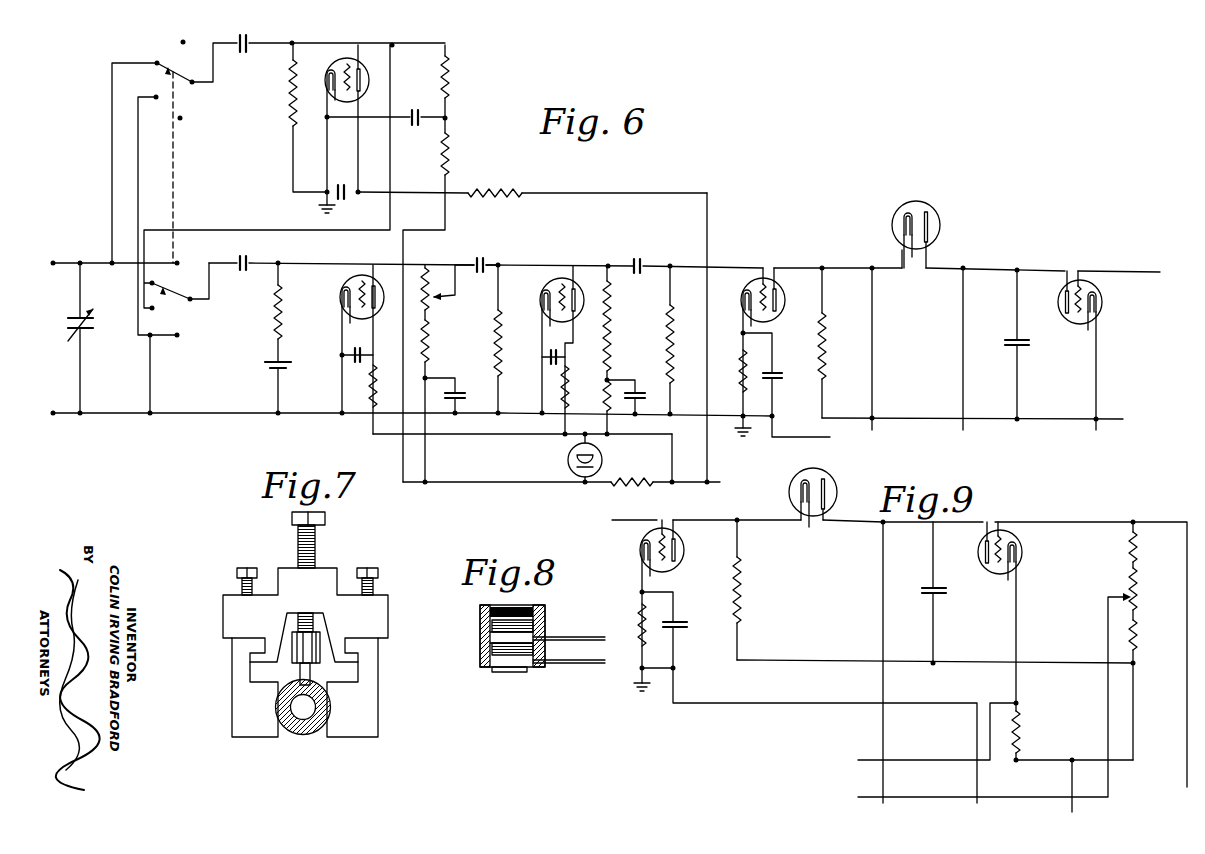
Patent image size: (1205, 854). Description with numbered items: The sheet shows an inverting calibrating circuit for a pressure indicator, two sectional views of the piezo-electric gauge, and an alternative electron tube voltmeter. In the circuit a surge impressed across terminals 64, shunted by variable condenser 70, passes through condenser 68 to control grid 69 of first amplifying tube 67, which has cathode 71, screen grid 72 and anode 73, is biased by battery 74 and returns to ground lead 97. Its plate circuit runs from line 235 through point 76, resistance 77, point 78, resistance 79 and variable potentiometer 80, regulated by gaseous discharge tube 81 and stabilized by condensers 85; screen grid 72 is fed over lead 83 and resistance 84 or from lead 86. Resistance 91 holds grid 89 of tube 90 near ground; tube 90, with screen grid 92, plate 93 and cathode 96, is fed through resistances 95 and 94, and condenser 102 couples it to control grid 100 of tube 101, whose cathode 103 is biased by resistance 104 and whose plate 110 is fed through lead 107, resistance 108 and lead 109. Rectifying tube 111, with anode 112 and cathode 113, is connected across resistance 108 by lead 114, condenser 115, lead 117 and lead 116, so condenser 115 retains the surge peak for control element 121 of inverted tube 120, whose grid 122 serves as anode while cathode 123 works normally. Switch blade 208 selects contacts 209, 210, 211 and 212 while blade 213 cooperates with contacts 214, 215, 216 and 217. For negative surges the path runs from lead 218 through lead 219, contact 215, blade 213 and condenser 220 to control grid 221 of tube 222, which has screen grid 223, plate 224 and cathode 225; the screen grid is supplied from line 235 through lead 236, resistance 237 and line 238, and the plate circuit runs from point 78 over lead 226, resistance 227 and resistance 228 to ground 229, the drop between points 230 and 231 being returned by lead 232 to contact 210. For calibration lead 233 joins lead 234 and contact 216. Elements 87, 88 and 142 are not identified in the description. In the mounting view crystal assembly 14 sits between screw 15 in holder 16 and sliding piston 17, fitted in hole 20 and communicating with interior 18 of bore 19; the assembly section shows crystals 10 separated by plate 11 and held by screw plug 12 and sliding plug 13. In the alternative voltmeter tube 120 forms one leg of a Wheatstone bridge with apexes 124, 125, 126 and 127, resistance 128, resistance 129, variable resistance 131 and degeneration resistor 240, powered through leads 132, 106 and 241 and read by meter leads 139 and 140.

In FIG. 6, the terminals 64 is at (50, 410).
In FIG. 6, the variable condenser 70 is at (74, 316).
In FIG. 6, the lead 218 is at (91, 272).
In FIG. 6, the lead 219 is at (108, 132).
In FIG. 6, the contact 215 is at (156, 61).
In FIG. 6, the switch blade 213 is at (183, 76).
In FIG. 6, the contact 214 is at (182, 39).
In FIG. 6, the contact 216 is at (155, 95).
In FIG. 6, the contact 217 is at (184, 122).
In FIG. 6, the lead 234 is at (144, 164).
In FIG. 6, the condenser 220 is at (241, 56).
In FIG. 6, the point 231 is at (393, 44).
In FIG. 6, the tube 222 is at (320, 93).
In FIG. 6, the cathode 225 is at (328, 66).
In FIG. 6, the control grid 221 is at (334, 98).
In FIG. 6, the plate 224 is at (359, 60).
In FIG. 6, the screen grid 223 is at (365, 89).
In FIG. 6, the line 238 is at (353, 162).
In FIG. 6, the point 230 is at (448, 116).
In FIG. 6, the resistance 228 is at (449, 71).
In FIG. 6, the resistance 227 is at (449, 148).
In FIG. 6, the ground 229 is at (310, 209).
In FIG. 6, the resistance 237 is at (502, 189).
In FIG. 6, the lead 236 is at (618, 189).
In FIG. 6, the lead 232 is at (244, 228).
In FIG. 6, the contact 209 is at (176, 262).
In FIG. 6, the contact 210 is at (168, 281).
In FIG. 6, the switch blade 208 is at (194, 291).
In FIG. 6, the contact 211 is at (155, 311).
In FIG. 6, the contact 212 is at (180, 338).
In FIG. 6, the lead 233 is at (152, 427).
In FIG. 6, the condenser 68 is at (248, 272).
In FIG. 6, the battery 74 is at (272, 379).
In FIG. 6, the lead 97 is at (232, 420).
In FIG. 6, the control grid 69 is at (349, 278).
In FIG. 6, the cathode 71 is at (336, 290).
In FIG. 6, the first amplifying tube 67 is at (338, 311).
In FIG. 6, the anode 73 is at (376, 285).
In FIG. 6, the screen grid 72 is at (376, 304).
In FIG. 6, the resistance 84 is at (370, 388).
In FIG. 6, the lead 226 is at (404, 250).
In FIG. 6, the variable potentiometer 80 is at (433, 286).
In FIG. 6, the slider 88 is at (443, 299).
In FIG. 6, the resistor 87 is at (432, 334).
In FIG. 6, the resistance 79 is at (432, 357).
In FIG. 6, the condensers 85 is at (464, 396).
In FIG. 6, the resistance 91 is at (502, 350).
In FIG. 6, the grid 89 is at (564, 283).
In FIG. 6, the cathode 96 is at (540, 288).
In FIG. 6, the tube 90 is at (540, 300).
In FIG. 6, the screen grid 92 is at (577, 314).
In FIG. 6, the plate 93 is at (576, 285).
In FIG. 6, the resistance 95 is at (601, 399).
In FIG. 6, the resistance 94 is at (612, 312).
In FIG. 6, the condenser 102 is at (643, 259).
In FIG. 6, the gaseous discharge tube 81 is at (565, 451).
In FIG. 6, the lead 83 is at (654, 435).
In FIG. 6, the resistance 77 is at (634, 473).
In FIG. 6, the point 76 is at (672, 482).
In FIG. 6, the point 78 is at (585, 483).
In FIG. 6, the lead 86 is at (485, 484).
In FIG. 6, the line 235 is at (720, 482).
In FIG. 6, the lead 109 is at (804, 263).
In FIG. 9, the lead 109 is at (712, 514).
In FIG. 6, the cathode 103 is at (746, 285).
In FIG. 9, the cathode 103 is at (638, 536).
In FIG. 6, the tube 101 is at (782, 284).
In FIG. 9, the tube 101 is at (640, 553).
In FIG. 6, the plate 110 is at (780, 301).
In FIG. 9, the plate 110 is at (686, 552).
In FIG. 6, the control grid 100 is at (772, 320).
In FIG. 9, the control grid 100 is at (674, 565).
In FIG. 6, the resistance 104 is at (736, 374).
In FIG. 9, the resistance 104 is at (633, 615).
In FIG. 6, the resistance 108 is at (830, 328).
In FIG. 9, the resistance 108 is at (743, 570).
In FIG. 6, the tube 111 is at (928, 200).
In FIG. 9, the tube 111 is at (826, 472).
In FIG. 6, the cathode 113 is at (898, 208).
In FIG. 9, the cathode 113 is at (798, 480).
In FIG. 6, the anode 112 is at (930, 221).
In FIG. 9, the anode 112 is at (837, 482).
In FIG. 6, the lead 117 is at (990, 264).
In FIG. 9, the lead 117 is at (903, 526).
In FIG. 6, the lead 116 is at (1014, 302).
In FIG. 9, the lead 116 is at (928, 561).
In FIG. 6, the condenser 115 is at (1038, 344).
In FIG. 9, the condenser 115 is at (942, 597).
In FIG. 6, the lead 114 is at (1020, 388).
In FIG. 6, the electron voltmeter tube 120 is at (1103, 312).
In FIG. 9, the electron voltmeter tube 120 is at (1022, 560).
In FIG. 6, the plate 121 is at (1062, 296).
In FIG. 9, the plate 121 is at (982, 548).
In FIG. 6, the grid 122 is at (1068, 317).
In FIG. 9, the grid 122 is at (998, 572).
In FIG. 6, the cathode 123 is at (1104, 289).
In FIG. 9, the cathode 123 is at (1020, 538).
In FIG. 6, the apex 127 is at (1094, 418).
In FIG. 9, the apex 127 is at (1014, 700).
In FIG. 6, the lead 107 is at (1042, 421).
In FIG. 7, the holder 16 is at (388, 617).
In FIG. 7, the screw 15 is at (315, 543).
In FIG. 7, the piezo-electric crystal assembly 14 is at (306, 660).
In FIG. 8, the piezo-electric crystal assembly 14 is at (475, 637).
In FIG. 7, the sliding piston 17 is at (311, 673).
In FIG. 7, the hole 20 is at (331, 688).
In FIG. 7, the interior 18 is at (318, 707).
In FIG. 7, the bore 19 is at (300, 734).
In FIG. 8, the screw plug 12 is at (519, 607).
In FIG. 8, the crystals 10 is at (546, 624).
In FIG. 8, the plate 11 is at (487, 648).
In FIG. 8, the sliding plug 13 is at (500, 672).
In FIG. 9, the conductor 142 is at (876, 640).
In FIG. 9, the apex 124 is at (1133, 520).
In FIG. 9, the resistance 128 is at (1137, 550).
In FIG. 9, the variable resistance 131 is at (1137, 586).
In FIG. 9, the apex 125 is at (1108, 596).
In FIG. 9, the resistance 129 is at (1137, 640).
In FIG. 9, the apex 126 is at (1136, 665).
In FIG. 9, the degeneration resistor 240 is at (1022, 724).
In FIG. 9, the lead 140 is at (927, 758).
In FIG. 9, the lead 139 is at (931, 797).
In FIG. 9, the lead 106 is at (1070, 779).
In FIG. 9, the lead 241 is at (1133, 724).
In FIG. 9, the lead 132 is at (1186, 758).